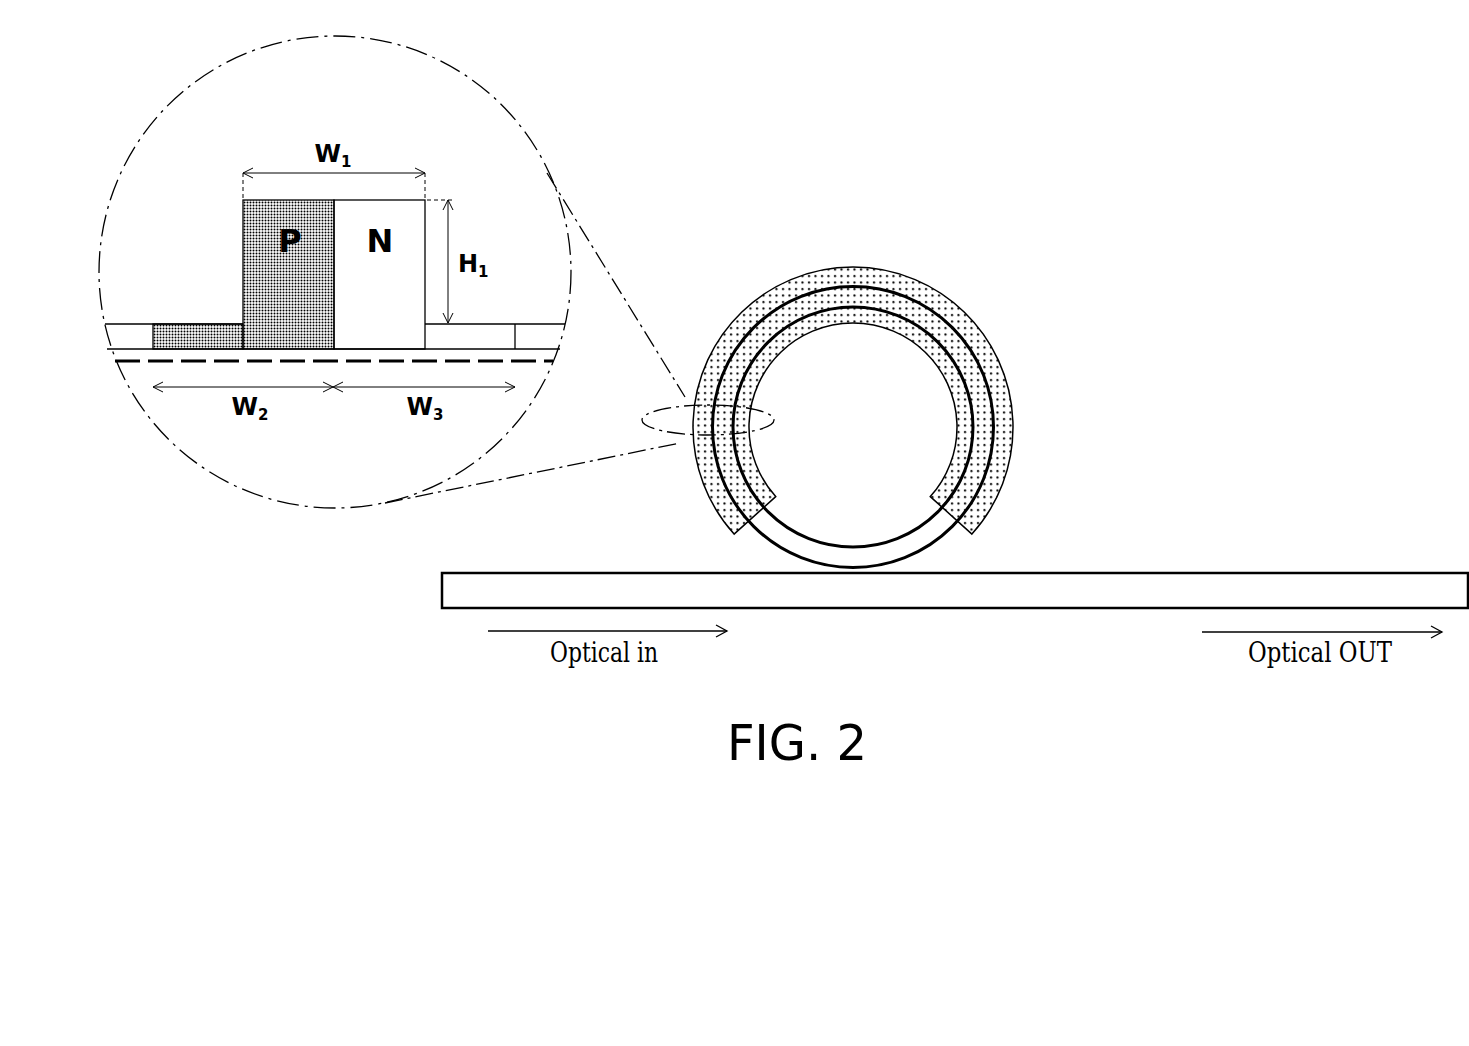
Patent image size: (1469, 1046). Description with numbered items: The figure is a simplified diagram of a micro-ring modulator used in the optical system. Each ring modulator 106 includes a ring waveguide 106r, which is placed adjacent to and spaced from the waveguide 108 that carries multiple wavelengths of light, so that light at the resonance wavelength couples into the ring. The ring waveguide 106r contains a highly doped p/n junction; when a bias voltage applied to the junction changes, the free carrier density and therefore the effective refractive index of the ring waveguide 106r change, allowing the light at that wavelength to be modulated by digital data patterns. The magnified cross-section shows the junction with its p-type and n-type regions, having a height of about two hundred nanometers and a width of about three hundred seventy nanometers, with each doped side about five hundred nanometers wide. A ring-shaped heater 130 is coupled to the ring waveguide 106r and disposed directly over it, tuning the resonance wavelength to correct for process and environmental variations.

The ring modulator 106 is at (877, 362).
The ring waveguide 106r is at (783, 538).
The heater 130 is at (978, 327).
The waveguide 108 is at (1171, 572).